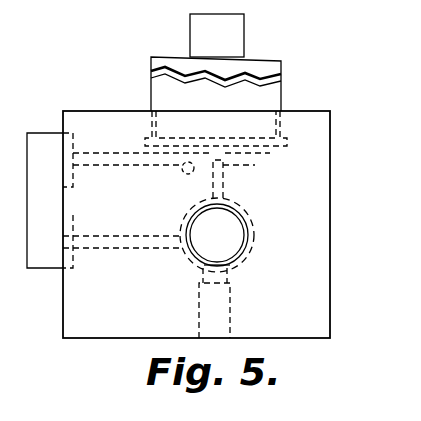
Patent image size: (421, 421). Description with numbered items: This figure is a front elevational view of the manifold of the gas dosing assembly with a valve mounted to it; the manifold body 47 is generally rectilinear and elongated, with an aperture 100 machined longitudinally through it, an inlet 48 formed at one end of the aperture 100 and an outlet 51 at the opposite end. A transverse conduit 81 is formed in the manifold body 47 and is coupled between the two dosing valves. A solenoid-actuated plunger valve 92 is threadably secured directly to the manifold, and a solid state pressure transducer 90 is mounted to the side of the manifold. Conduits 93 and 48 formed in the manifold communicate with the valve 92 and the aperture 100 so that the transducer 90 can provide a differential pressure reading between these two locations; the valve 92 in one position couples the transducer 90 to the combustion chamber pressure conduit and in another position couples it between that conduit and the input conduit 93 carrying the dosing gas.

The valve body 47 is at (330, 185).
The pressure transducer 90 is at (37, 132).
The valve 92 is at (283, 96).
The input conduit 93 is at (103, 167).
The transverse conduit 81 is at (180, 171).
The outlet 51 is at (234, 229).
The aperture 100 is at (224, 243).
The inlet 48 is at (127, 249).